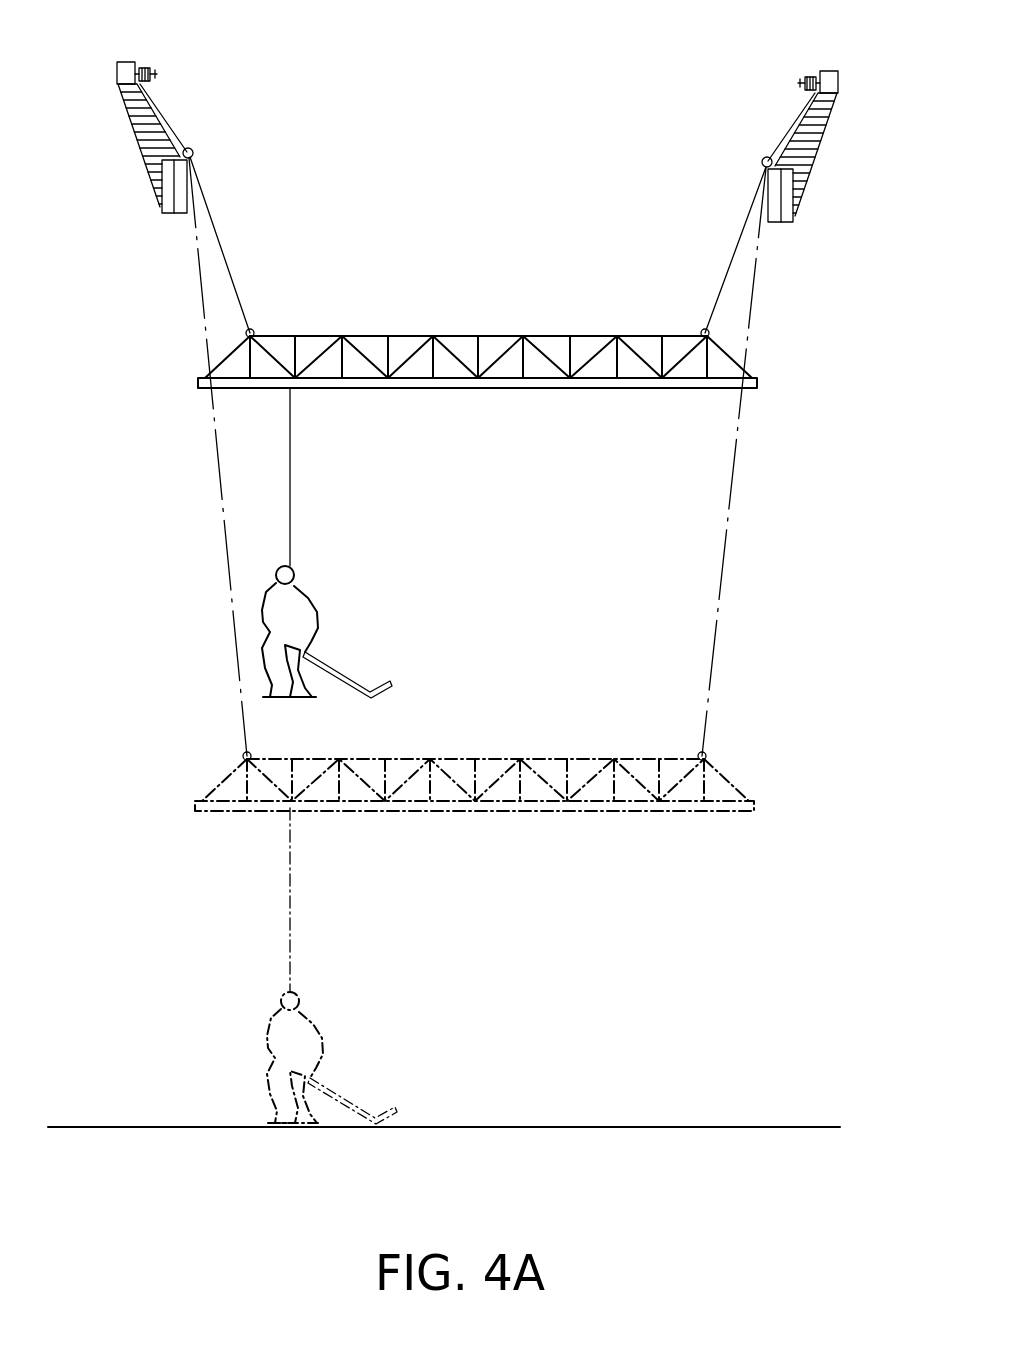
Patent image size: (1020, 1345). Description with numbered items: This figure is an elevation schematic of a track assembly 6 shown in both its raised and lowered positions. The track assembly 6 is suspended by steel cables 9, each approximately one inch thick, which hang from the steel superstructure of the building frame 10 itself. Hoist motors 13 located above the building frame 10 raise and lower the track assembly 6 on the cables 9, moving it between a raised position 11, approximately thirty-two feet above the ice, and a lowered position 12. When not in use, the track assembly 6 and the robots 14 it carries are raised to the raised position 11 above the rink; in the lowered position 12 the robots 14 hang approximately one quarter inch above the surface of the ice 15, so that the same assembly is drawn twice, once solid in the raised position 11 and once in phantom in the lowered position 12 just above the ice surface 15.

The track assembly 6 is at (165, 370).
The steel cables 9 is at (724, 546).
The building frame 10 is at (162, 213).
The raised position 11 is at (163, 583).
The lowered position 12 is at (213, 930).
The hoist motors 13 is at (122, 62).
The robots 14 is at (312, 600).
The surface of the ice 15 is at (737, 1126).